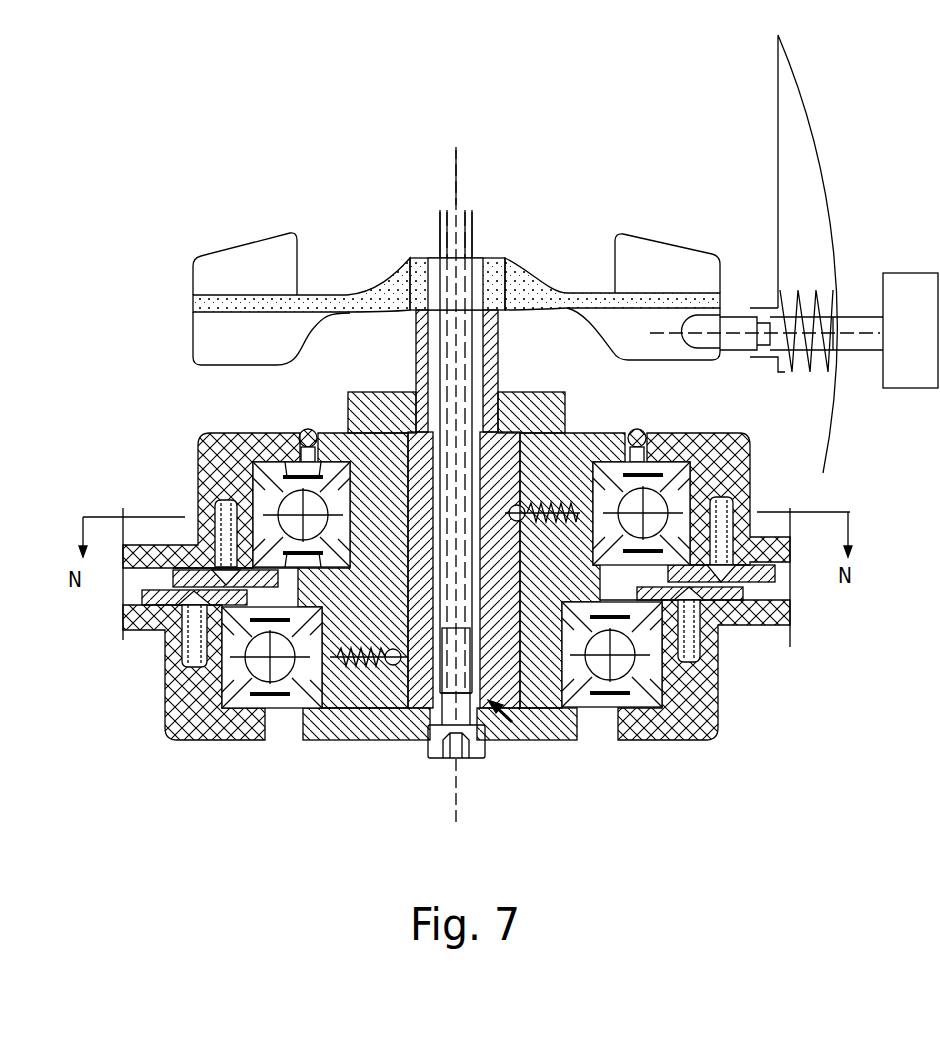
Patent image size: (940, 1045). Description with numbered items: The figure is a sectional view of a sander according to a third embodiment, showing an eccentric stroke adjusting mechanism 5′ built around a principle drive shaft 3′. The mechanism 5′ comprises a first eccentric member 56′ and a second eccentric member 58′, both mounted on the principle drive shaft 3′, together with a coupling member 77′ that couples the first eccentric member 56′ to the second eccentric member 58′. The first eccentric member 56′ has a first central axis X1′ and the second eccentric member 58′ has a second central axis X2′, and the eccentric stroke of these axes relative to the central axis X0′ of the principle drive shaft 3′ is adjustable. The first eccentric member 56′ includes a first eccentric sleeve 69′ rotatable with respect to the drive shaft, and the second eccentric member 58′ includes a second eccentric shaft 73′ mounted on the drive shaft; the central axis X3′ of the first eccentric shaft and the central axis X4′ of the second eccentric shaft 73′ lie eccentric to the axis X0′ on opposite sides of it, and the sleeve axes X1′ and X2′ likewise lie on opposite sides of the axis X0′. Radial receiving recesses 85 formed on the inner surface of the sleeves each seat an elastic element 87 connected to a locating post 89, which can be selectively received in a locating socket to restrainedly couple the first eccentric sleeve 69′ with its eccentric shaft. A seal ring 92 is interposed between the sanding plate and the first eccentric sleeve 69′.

The principle drive shaft 3′ is at (455, 349).
The eccentric stroke adjusting mechanism 5′ is at (522, 727).
The first eccentric member 56′ is at (362, 424).
The second eccentric member 58′ is at (547, 690).
The first eccentric sleeve 69′ is at (330, 478).
The second eccentric shaft 73′ is at (418, 680).
The coupling member 77′ is at (498, 402).
The radial receiving recesses 85 is at (743, 627).
The elastic element 87 is at (520, 512).
The locating post 89 is at (545, 465).
The seal ring 92 is at (278, 432).
The central axis of the principle drive shaft X0′ is at (460, 168).
The first central axis X1′ is at (474, 258).
The second central axis X2′ is at (440, 258).
The central axis of the first eccentric shaft X3′ is at (469, 256).
The central axis of the second eccentric shaft X4′ is at (446, 256).